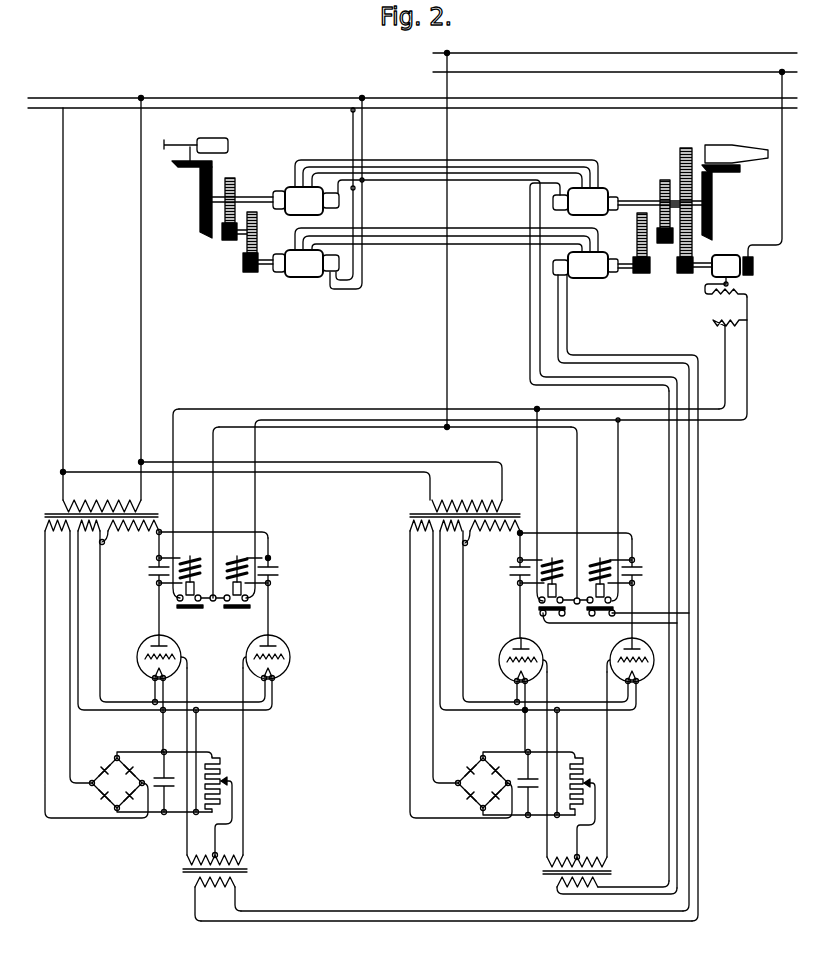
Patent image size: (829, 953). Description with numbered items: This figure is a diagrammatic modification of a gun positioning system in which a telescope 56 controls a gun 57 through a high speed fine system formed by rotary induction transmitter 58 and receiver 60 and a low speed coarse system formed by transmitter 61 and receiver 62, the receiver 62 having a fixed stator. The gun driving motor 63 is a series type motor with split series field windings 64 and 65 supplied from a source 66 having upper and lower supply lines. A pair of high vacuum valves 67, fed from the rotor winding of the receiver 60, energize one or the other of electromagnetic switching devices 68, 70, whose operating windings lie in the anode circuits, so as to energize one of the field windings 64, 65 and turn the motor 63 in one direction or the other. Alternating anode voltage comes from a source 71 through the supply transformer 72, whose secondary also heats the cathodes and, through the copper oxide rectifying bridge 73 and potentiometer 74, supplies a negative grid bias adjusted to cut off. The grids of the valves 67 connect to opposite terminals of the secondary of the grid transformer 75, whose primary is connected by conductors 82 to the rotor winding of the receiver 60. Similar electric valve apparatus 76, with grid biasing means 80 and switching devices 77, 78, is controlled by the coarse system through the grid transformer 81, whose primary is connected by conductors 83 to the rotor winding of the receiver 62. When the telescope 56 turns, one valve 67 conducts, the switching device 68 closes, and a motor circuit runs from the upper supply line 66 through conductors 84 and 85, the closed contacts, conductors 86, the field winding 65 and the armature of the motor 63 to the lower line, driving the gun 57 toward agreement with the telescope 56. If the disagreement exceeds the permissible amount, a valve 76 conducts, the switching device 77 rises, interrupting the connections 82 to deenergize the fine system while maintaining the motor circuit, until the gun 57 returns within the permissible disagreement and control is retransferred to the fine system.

The telescope 56 is at (205, 142).
The gun 57 is at (748, 147).
The high speed rotary induction apparatus transmitter 58 is at (312, 263).
The high speed rotary induction apparatus receiver 60 is at (585, 265).
The low speed rotary induction apparatus transmitter 61 is at (312, 201).
The low speed rotary induction apparatus receiver 62 is at (585, 201).
The gun driving motor 63 is at (732, 266).
The split series field winding 64 is at (742, 296).
The split series field winding 65 is at (711, 323).
The source 66 is at (588, 56).
The valves 67 is at (242, 649).
The electromagnetic switching device 68 is at (192, 558).
The electromagnetic switching device 70 is at (237, 558).
The source 71 is at (178, 108).
The supply transformer 72 is at (43, 513).
The copper oxide rectifying bridge 73 is at (117, 741).
The potentiometer 74 is at (215, 763).
The grid transformer 75 is at (241, 870).
The electric valve apparatus 76 is at (610, 650).
The electromagnetic switching device 77 is at (552, 560).
The electromagnetic switching device 78 is at (600, 560).
The grid biasing means 80 is at (529, 743).
The grid transformer 81 is at (603, 872).
The conductors 82 is at (405, 913).
The conductors 83 is at (669, 777).
The conductor 84 is at (447, 341).
The conductor 85 is at (355, 428).
The conductors 86 is at (277, 409).